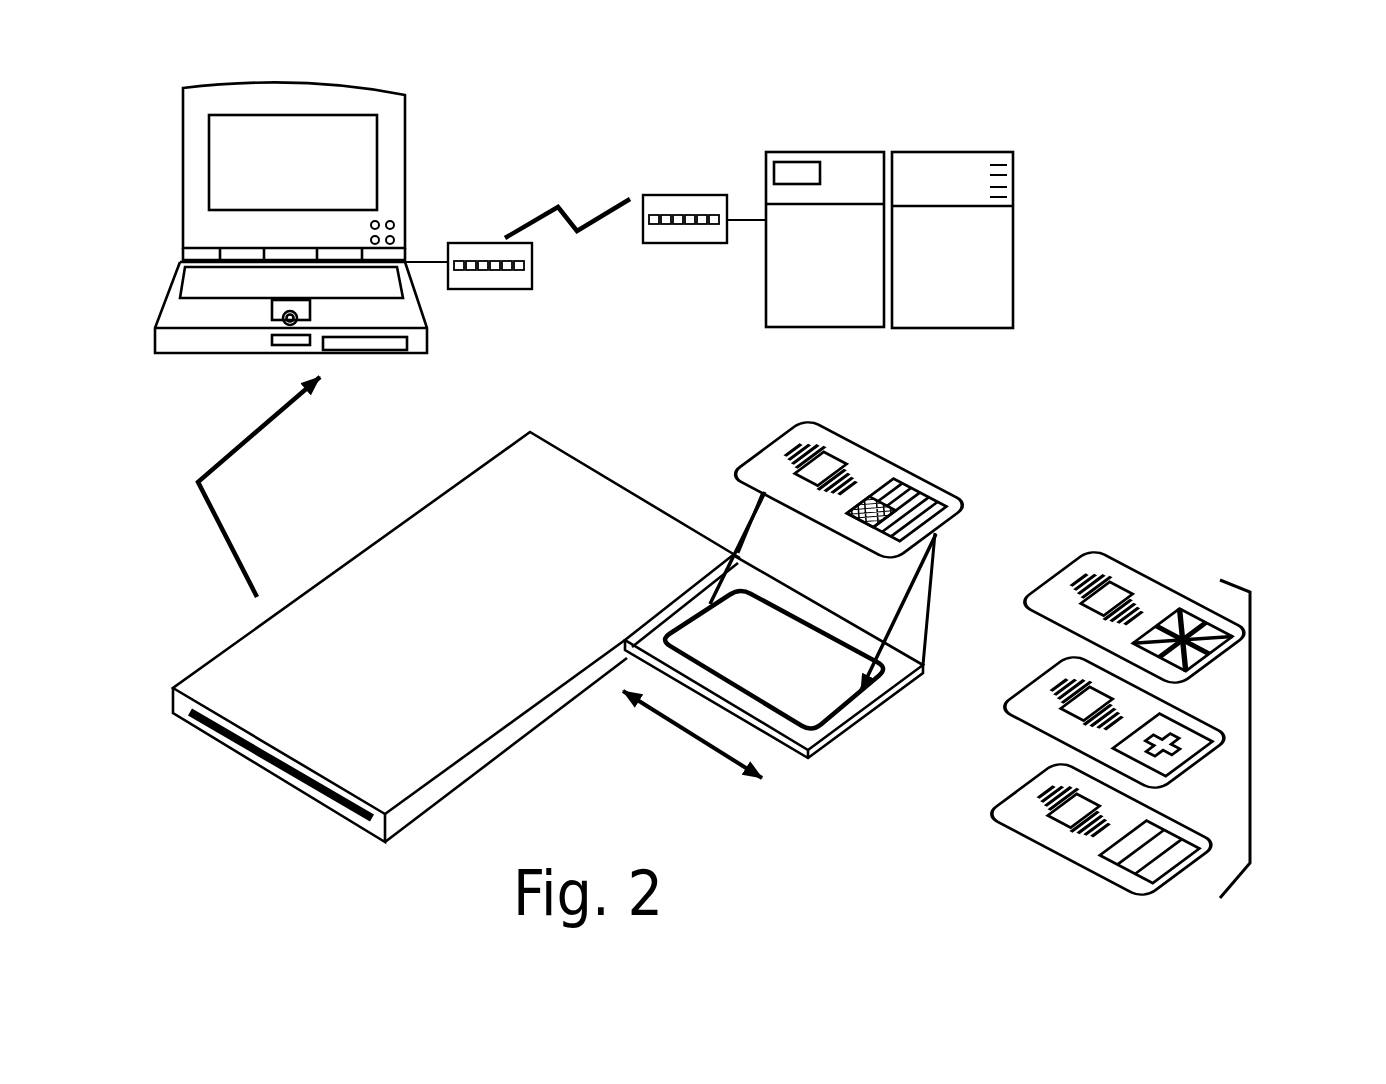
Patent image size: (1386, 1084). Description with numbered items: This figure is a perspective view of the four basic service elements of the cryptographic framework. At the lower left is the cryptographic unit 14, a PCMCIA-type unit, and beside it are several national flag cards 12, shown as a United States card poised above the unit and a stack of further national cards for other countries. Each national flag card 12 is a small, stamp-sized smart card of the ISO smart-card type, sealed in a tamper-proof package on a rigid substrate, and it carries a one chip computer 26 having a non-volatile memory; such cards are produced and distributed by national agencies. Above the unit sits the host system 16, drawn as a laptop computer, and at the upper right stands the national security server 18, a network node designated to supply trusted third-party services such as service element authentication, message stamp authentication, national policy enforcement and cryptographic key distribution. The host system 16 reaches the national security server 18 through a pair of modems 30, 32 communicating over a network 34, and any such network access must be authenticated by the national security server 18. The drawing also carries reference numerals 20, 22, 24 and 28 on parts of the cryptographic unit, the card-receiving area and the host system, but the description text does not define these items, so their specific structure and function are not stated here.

The national flag card 12 is at (1039, 625).
The cryptographic unit 14 is at (556, 470).
The host system 16 is at (393, 177).
The national security server 18 is at (872, 163).
The connector slot of cryptographic unit 20 is at (346, 812).
The card tray 22 is at (800, 752).
The tray sliding direction arrow 24 is at (702, 745).
The one chip computer 26 is at (830, 462).
The PCMCIA slot of laptop 28 is at (388, 348).
The modem 30 is at (503, 289).
The modem 32 is at (663, 243).
The network 34 is at (590, 208).